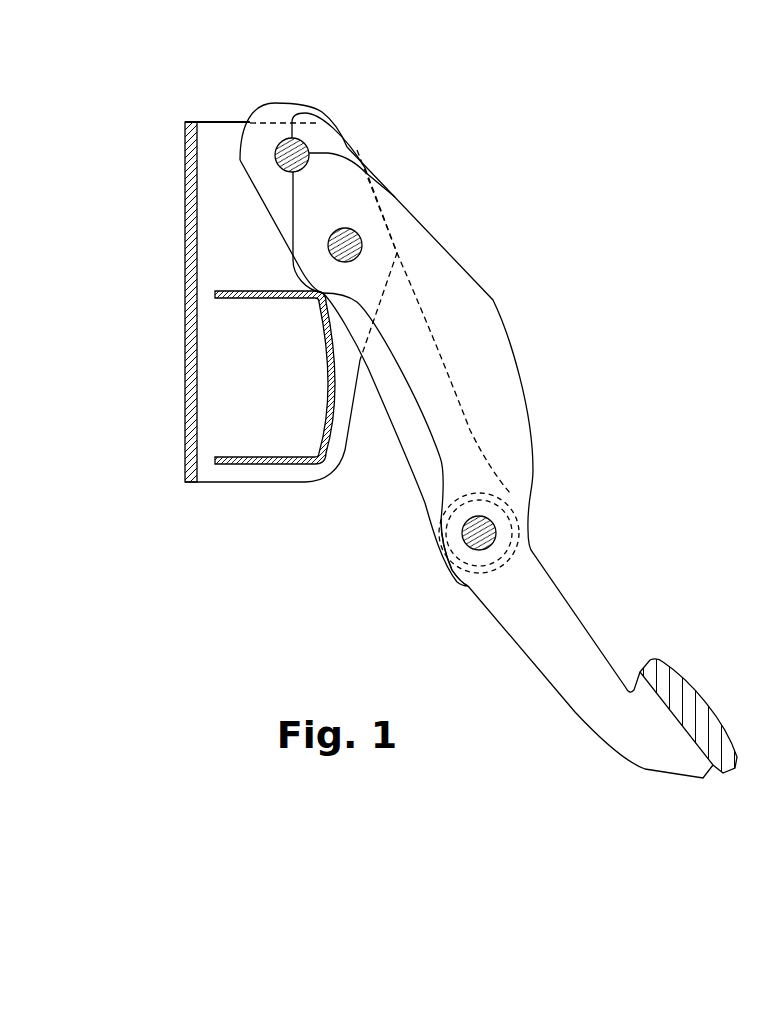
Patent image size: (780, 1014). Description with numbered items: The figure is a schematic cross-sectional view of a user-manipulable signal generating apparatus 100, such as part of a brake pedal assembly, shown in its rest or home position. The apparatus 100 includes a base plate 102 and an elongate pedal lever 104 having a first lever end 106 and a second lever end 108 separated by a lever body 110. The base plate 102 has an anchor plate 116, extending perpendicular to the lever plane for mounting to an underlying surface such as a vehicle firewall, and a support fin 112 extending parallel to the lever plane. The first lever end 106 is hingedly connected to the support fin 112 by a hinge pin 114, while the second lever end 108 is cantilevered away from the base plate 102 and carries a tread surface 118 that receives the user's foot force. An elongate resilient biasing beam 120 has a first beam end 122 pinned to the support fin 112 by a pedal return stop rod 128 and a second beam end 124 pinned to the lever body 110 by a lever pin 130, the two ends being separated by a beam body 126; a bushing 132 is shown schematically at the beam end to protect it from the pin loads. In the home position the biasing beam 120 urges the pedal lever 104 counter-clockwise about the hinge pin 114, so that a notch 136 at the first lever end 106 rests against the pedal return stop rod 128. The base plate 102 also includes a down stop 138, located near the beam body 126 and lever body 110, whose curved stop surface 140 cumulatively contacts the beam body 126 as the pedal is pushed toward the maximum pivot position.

The user-manipulable signal generating apparatus 100 is at (468, 129).
The base plate 102 is at (160, 128).
The elongate pedal lever 104 is at (549, 393).
The first lever end 106 is at (355, 110).
The second lever end 108 is at (666, 797).
The lever body 110 is at (529, 304).
The support fin 112 is at (208, 106).
The hinge pin 114 is at (358, 236).
The anchor plate 116 is at (174, 397).
The tread surface 118 is at (714, 686).
The elongate resilient biasing beam 120 is at (395, 523).
The first beam end 122 is at (332, 94).
The second beam end 124 is at (436, 590).
The beam body 126 is at (375, 473).
The pedal return stop rod 128 is at (291, 137).
The lever pin 130 is at (492, 522).
The bushing 132 is at (523, 558).
The notch 136 is at (244, 490).
The down stop 138 is at (309, 388).
The curved stop surface 140 is at (229, 260).